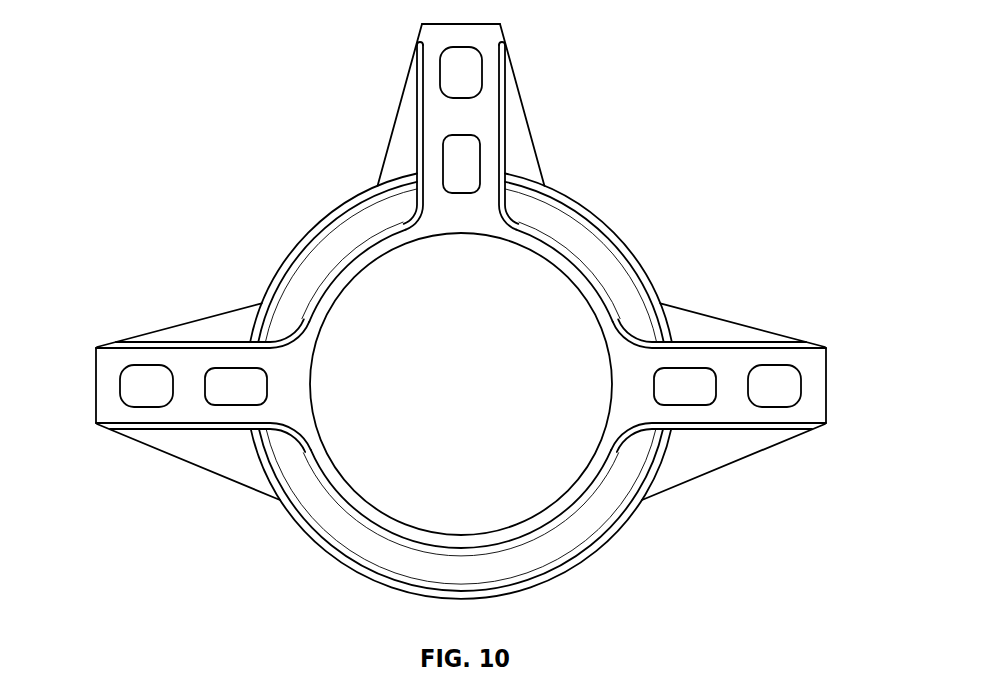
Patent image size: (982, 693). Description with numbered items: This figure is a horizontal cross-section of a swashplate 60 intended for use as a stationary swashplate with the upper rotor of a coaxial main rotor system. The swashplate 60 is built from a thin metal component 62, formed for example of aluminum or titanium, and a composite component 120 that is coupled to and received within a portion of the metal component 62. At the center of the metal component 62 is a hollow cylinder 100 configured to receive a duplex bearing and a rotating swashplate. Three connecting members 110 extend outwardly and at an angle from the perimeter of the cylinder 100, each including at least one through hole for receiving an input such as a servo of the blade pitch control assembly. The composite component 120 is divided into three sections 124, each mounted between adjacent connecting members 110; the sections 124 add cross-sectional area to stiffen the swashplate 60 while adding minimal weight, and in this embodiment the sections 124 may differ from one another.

The swashplate 60 is at (686, 112).
The metal component 62 is at (585, 273).
The hollow cylinder 100 is at (412, 533).
The connecting members 110 is at (483, 128).
The composite component 120 is at (582, 563).
The sections 124 is at (322, 262).